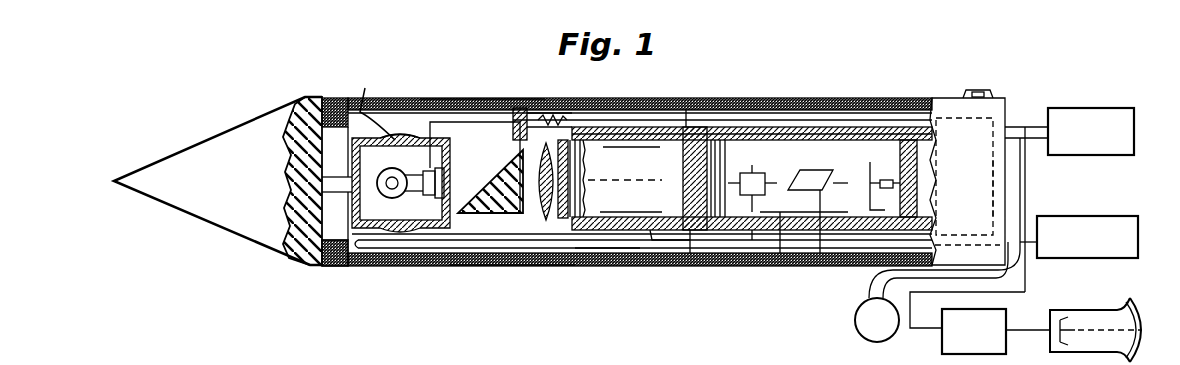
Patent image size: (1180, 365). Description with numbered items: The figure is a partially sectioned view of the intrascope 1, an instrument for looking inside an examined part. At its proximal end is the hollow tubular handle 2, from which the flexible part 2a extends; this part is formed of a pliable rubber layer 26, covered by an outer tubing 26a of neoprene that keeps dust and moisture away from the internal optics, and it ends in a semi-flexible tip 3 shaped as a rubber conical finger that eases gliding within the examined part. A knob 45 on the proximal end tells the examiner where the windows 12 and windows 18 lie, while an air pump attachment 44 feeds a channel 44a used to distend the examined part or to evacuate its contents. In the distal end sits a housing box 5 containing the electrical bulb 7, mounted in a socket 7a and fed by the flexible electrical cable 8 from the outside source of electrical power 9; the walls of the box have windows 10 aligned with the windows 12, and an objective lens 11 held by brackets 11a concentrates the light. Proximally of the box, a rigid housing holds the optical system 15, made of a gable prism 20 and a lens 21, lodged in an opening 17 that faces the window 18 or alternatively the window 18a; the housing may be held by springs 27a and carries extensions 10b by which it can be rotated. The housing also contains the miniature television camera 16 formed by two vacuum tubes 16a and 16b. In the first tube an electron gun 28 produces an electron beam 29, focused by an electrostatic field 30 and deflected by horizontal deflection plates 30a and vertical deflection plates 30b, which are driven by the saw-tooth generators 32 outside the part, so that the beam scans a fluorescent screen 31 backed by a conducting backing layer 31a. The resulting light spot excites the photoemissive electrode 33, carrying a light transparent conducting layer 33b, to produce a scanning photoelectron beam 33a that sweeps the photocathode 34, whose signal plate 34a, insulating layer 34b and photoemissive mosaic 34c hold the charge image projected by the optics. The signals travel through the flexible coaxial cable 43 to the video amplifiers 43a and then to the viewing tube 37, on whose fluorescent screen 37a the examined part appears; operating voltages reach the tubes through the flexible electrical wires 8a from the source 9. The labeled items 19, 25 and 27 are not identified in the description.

The intrascope 1 is at (648, 98).
The handle 2 is at (954, 98).
The flexible part 2a is at (442, 98).
The semi-flexible tip 3 is at (258, 116).
The housing box 5 is at (412, 137).
The electrical bulb 7 is at (380, 172).
The socket 7a is at (446, 176).
The flexible electrical cable 8 is at (482, 98).
The flexible electrical wires 8a is at (993, 192).
The source of electrical power 9 is at (1122, 105).
The windows 10 is at (374, 105).
The extensions 10b is at (944, 151).
The objective lens 11 is at (400, 228).
The brackets 11a is at (372, 228).
The windows 12 is at (400, 98).
The optical system 15 is at (522, 141).
The television camera 16 is at (732, 268).
The vacuum tube 16a is at (778, 268).
The vacuum tube 16b is at (662, 268).
The opening 17 is at (512, 213).
The windows 18 is at (487, 268).
The window 18a is at (516, 98).
The conductor 19 is at (820, 127).
The gable prism 20 is at (520, 188).
The lens 21 is at (466, 216).
The chamber 25 is at (630, 212).
The rubber layer 26 is at (548, 104).
The outer tubing 26a is at (585, 105).
The frame 27 is at (500, 131).
The springs 27a is at (527, 268).
The electron gun 28 is at (905, 155).
The electron beam 29 is at (846, 182).
The electrostatic field 30 is at (826, 268).
The horizontal deflection plates 30a is at (760, 173).
The vertical deflection plates 30b is at (814, 171).
The fluorescent screen 31 is at (734, 127).
The conducting backing layer 31a is at (764, 127).
The saw-tooth generators 32 is at (1116, 214).
The photoemissive electrode 33 is at (688, 110).
The photoelectron beam 33a is at (652, 180).
The light transparent conducting layer 33b is at (698, 268).
The photocathode 34 is at (580, 268).
The signal plate 34a is at (560, 268).
The insulating layer 34b is at (600, 252).
The photoemissive mosaic 34c is at (586, 186).
The viewing tube 37 is at (1090, 310).
The fluorescent screen 37a is at (1140, 291).
The flexible coaxial cable 43 is at (618, 108).
The video amplifiers 43a is at (1006, 310).
The air pump attachment 44 is at (874, 342).
The channel 44a is at (352, 268).
The knob 45 is at (983, 90).